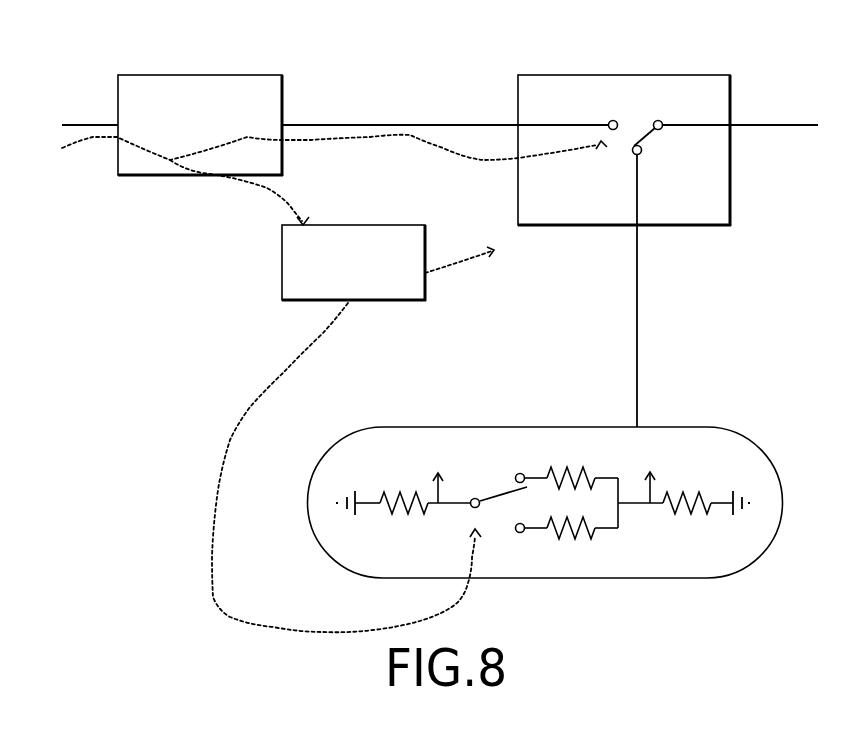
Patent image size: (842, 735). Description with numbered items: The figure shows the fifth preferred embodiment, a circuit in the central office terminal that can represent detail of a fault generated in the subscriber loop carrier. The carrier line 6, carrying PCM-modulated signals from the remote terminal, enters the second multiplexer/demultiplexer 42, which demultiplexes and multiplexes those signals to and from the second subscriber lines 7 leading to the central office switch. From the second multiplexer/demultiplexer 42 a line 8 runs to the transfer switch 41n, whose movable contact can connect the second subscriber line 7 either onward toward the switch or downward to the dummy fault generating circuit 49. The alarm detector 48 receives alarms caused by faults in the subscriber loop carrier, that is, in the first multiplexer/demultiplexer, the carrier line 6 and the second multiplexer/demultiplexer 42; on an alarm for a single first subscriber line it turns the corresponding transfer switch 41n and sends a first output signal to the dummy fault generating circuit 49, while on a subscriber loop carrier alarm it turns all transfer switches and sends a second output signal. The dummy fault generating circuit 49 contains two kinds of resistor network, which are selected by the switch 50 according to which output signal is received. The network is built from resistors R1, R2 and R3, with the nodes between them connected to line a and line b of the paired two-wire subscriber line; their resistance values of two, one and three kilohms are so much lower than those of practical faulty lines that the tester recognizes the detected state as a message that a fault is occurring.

The carrier line 6 is at (93, 121).
The second subscriber line 7 is at (765, 120).
The transmission line 8 is at (385, 123).
The second multiplexer/demultiplexer 42 is at (216, 75).
The transfer switch 41n is at (645, 95).
The alarm detector 48 is at (360, 225).
The dummy fault generating circuit 49 is at (545, 506).
The switch 50 is at (527, 550).
The resistor R1 is at (411, 520).
The resistor R2 is at (587, 542).
The resistor R3 is at (682, 521).
The line a is at (442, 473).
The line b is at (655, 473).